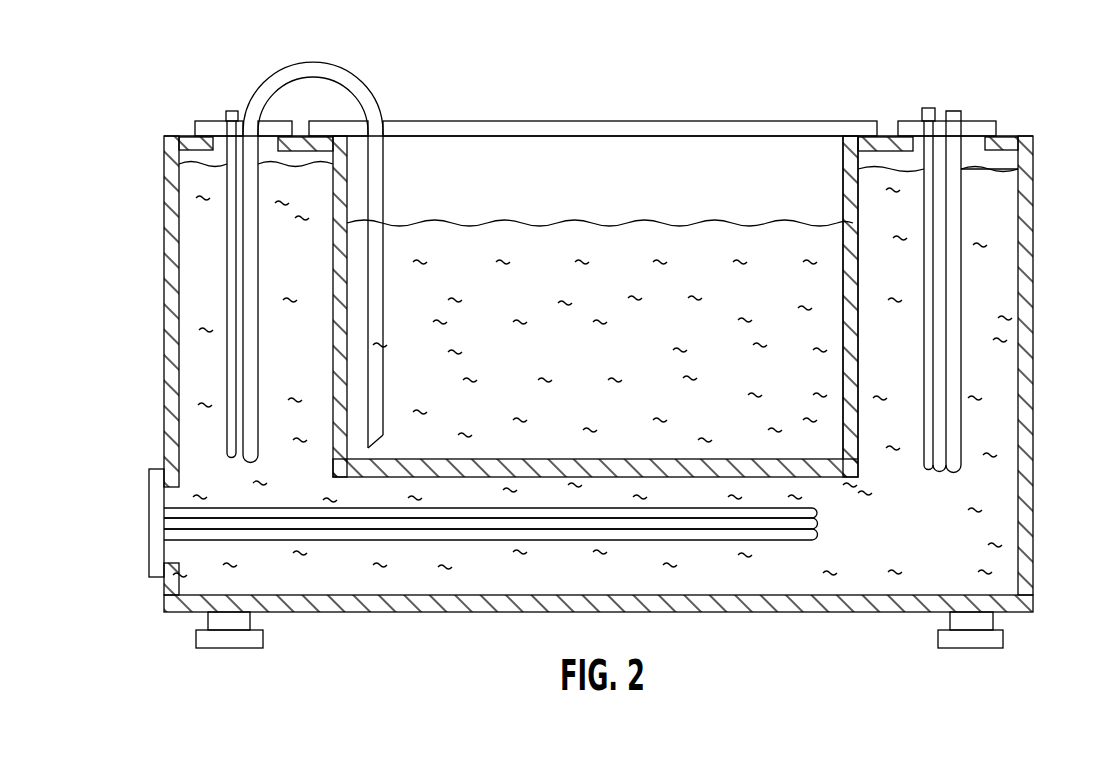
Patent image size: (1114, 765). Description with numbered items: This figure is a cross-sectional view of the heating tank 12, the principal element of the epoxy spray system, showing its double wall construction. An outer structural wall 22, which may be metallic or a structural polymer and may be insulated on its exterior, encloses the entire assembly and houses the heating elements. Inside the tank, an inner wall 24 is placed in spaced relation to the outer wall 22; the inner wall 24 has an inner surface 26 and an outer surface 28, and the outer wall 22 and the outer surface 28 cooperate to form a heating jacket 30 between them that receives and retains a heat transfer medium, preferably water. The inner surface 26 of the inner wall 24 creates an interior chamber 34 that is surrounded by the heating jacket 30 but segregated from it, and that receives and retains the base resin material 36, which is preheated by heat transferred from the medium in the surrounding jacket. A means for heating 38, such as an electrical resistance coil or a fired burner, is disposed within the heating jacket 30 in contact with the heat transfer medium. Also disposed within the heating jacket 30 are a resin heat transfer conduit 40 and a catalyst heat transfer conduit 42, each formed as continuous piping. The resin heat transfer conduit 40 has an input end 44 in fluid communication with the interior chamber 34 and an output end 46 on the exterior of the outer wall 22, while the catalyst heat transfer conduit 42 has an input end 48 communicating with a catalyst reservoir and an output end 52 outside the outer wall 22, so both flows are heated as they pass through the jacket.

The heating tank 12 is at (812, 577).
The outer structural wall 22 is at (1032, 441).
The inner wall 24 is at (843, 207).
The inner surface 26 is at (843, 275).
The outer surface 28 is at (858, 272).
The heating jacket 30 is at (993, 307).
The interior chamber 34 is at (603, 163).
The base resin material 36 is at (613, 348).
The means for heating 38 is at (165, 532).
The resin heat transfer conduit 40 is at (243, 262).
The catalyst heat transfer conduit 42 is at (961, 223).
The input end 44 is at (384, 400).
The output end 46 is at (232, 111).
The input end 48 is at (955, 110).
The output end 52 is at (927, 108).